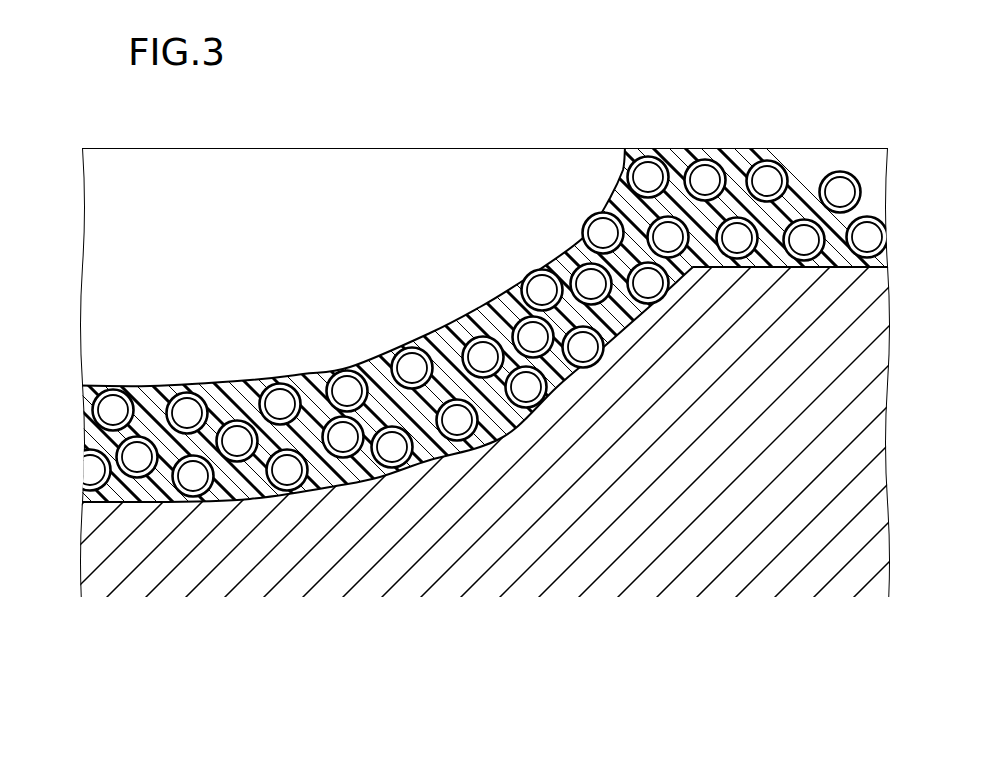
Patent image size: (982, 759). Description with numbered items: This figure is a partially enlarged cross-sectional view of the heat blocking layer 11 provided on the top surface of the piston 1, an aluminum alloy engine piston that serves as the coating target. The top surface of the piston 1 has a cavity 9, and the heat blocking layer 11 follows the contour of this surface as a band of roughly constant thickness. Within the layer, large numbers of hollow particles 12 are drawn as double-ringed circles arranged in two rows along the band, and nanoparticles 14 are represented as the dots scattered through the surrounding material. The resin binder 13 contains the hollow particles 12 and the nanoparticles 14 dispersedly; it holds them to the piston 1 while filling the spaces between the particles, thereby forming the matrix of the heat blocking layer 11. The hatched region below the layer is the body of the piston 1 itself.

The piston 1 is at (102, 548).
The cavity 9 is at (312, 165).
The heat blocking layer 11 is at (615, 182).
The hollow particles 12 is at (765, 153).
The resin binder 13 is at (432, 335).
The nanoparticles 14 is at (473, 320).